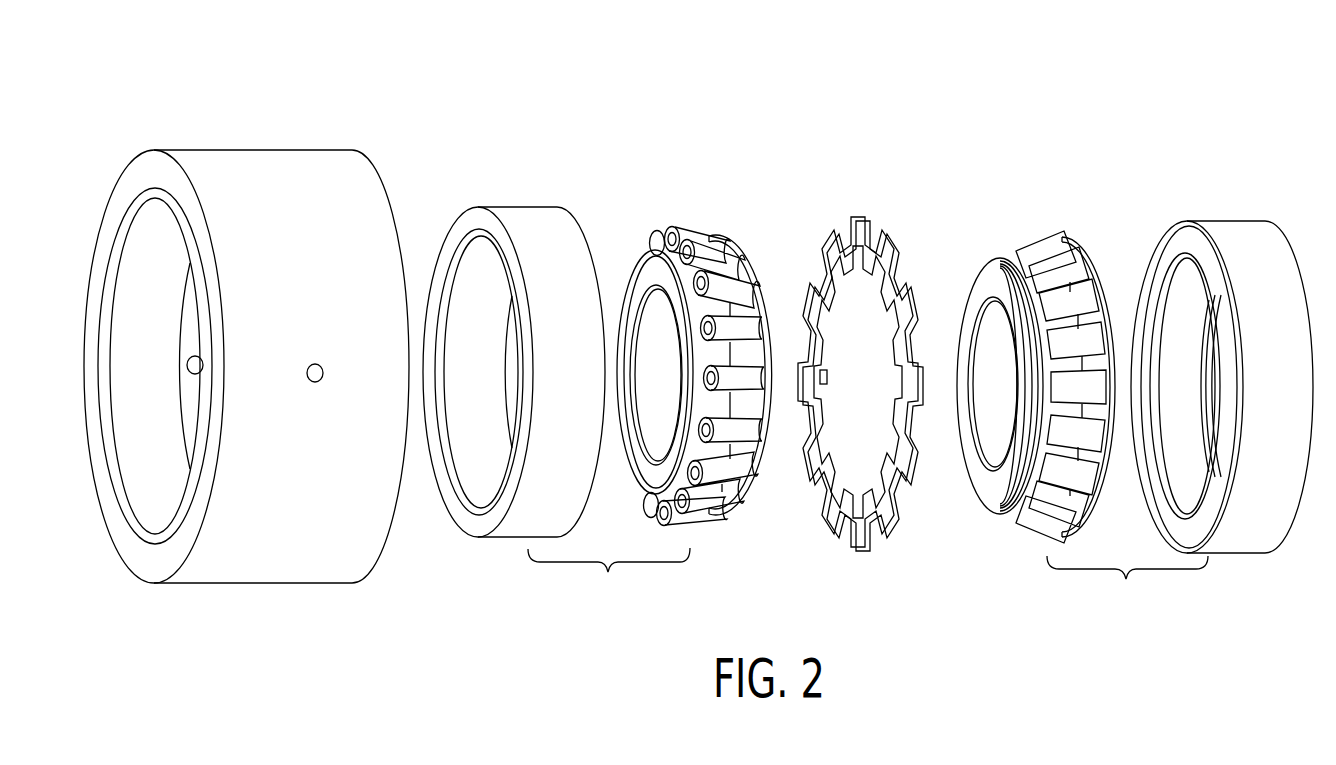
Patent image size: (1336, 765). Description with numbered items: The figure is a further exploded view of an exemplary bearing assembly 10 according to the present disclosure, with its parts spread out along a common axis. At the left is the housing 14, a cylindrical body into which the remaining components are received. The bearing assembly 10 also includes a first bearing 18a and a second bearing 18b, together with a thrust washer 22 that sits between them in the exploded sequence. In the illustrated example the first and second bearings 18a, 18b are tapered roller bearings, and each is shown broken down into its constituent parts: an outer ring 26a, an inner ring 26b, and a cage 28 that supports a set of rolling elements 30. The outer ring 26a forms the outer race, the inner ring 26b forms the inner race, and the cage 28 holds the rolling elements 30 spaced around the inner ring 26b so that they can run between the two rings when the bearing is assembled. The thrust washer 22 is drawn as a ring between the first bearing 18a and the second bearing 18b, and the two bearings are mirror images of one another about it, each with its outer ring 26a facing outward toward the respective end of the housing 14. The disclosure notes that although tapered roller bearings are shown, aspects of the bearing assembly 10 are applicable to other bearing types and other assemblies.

The bearing assembly 10 is at (425, 125).
The housing 14 is at (266, 150).
The first bearing 18a is at (609, 584).
The second bearing 18b is at (1127, 591).
The thrust washer 22 is at (862, 218).
The outer ring 26a is at (550, 219).
The inner ring 26b is at (645, 278).
The cage 28 is at (738, 270).
The rolling elements 30 is at (710, 237).